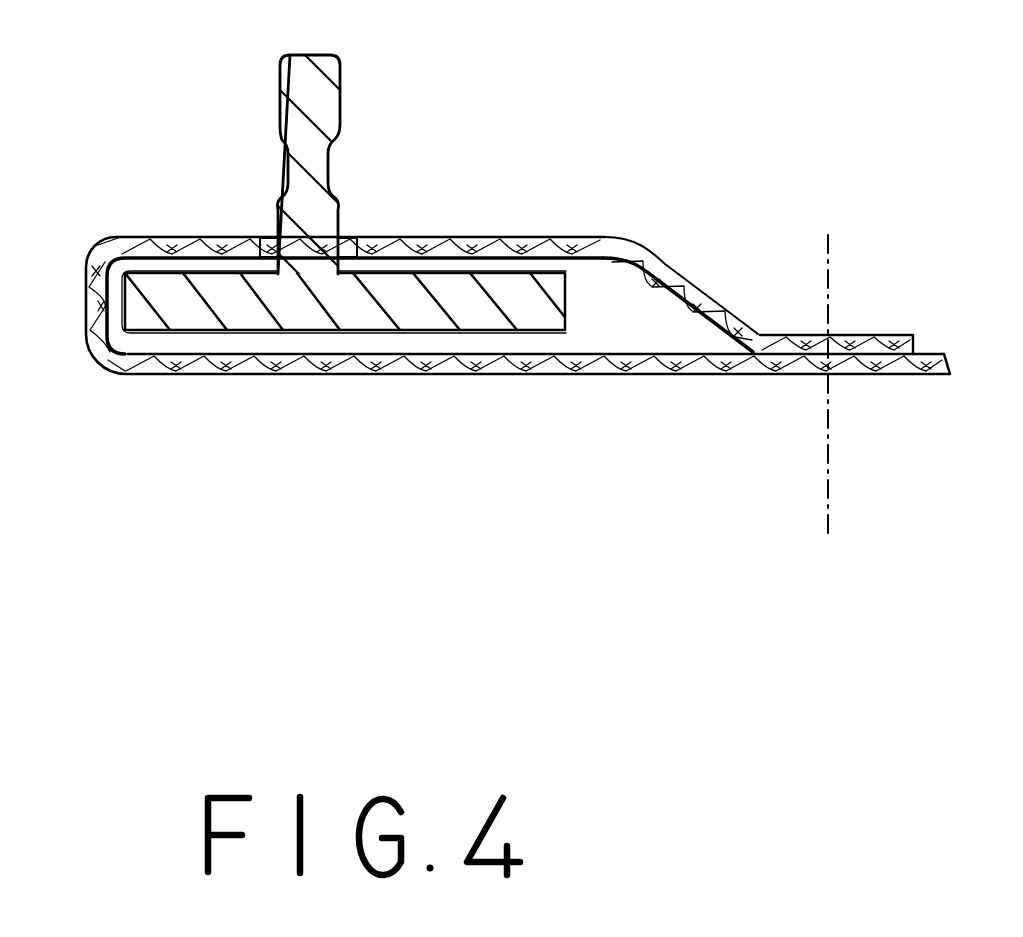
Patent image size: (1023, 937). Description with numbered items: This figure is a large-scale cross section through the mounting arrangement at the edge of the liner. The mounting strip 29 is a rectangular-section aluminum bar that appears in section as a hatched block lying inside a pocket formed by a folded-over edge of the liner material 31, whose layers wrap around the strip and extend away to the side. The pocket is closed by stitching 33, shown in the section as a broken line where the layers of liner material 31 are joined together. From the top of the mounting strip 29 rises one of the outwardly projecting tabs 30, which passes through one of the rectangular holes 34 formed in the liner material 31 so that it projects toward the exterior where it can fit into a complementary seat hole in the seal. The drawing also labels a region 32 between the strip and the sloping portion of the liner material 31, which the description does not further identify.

The mounting strip 29 is at (473, 301).
The tabs 30 is at (300, 195).
The liner material 31 is at (893, 373).
The space 32 is at (623, 313).
The stitching 33 is at (830, 278).
The rectangular holes 34 is at (347, 257).